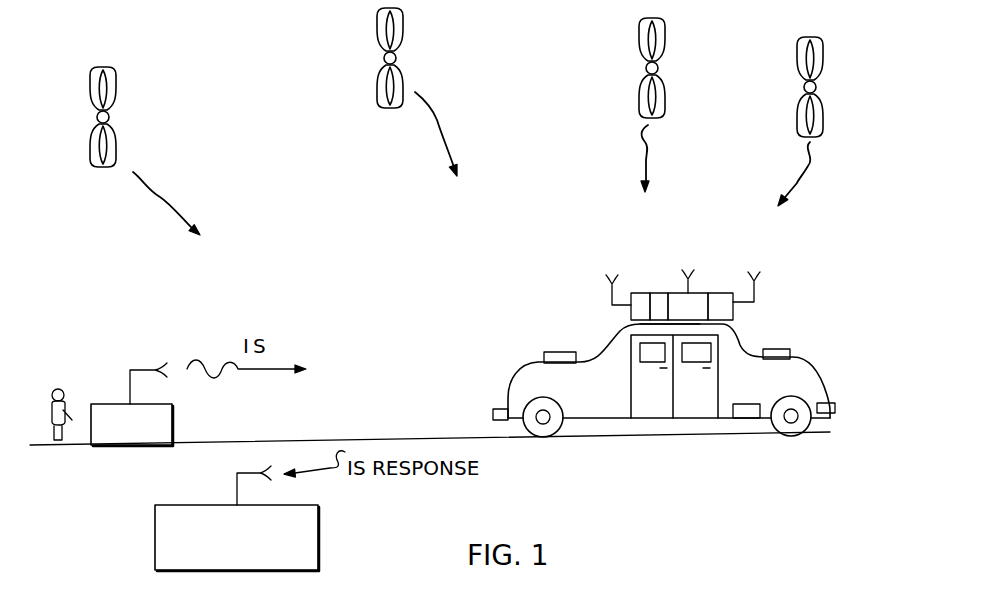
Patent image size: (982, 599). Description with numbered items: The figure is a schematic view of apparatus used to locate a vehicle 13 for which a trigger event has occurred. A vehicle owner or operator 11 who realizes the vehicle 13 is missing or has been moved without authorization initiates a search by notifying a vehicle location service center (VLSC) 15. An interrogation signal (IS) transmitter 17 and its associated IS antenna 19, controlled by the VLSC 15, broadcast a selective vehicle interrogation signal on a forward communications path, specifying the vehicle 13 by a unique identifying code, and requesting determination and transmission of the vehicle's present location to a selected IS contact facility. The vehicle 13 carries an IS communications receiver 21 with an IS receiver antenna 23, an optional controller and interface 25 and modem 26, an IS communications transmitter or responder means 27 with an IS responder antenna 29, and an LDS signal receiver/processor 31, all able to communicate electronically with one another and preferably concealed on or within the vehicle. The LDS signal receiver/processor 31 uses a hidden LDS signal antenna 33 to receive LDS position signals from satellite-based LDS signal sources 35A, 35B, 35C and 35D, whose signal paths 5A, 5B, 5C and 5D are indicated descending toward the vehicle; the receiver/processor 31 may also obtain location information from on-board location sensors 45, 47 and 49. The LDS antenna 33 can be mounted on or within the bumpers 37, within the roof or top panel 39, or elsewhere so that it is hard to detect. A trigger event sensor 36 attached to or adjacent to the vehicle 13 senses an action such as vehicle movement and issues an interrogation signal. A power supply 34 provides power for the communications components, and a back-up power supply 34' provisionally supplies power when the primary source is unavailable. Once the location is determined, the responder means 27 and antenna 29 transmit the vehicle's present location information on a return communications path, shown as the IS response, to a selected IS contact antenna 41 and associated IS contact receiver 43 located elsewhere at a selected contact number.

The wind direction arrow 5A is at (162, 198).
The wind direction arrow 5B is at (438, 137).
The wind direction arrow 5C is at (648, 164).
The wind direction arrow 5D is at (798, 182).
The LDS signal source 35A is at (110, 114).
The LDS signal source 35B is at (397, 55).
The LDS signal source 35C is at (659, 66).
The LDS signal source 35D is at (804, 89).
The vehicle owner or operator 11 is at (62, 392).
The vehicle 13 is at (706, 426).
The vehicle location service center (VLSC) 15 is at (135, 442).
The interrogation signal (IS) transmitter 17 is at (118, 445).
The IS antenna 19 is at (140, 365).
The IS communications receiver 21 is at (631, 295).
The IS receiver antenna 23 is at (611, 305).
The controller and interface 25 is at (664, 273).
The modem 26 is at (659, 300).
The IS communications transmitter or responder means 27 is at (726, 292).
The IS responder antenna 29 is at (760, 301).
The LDS signal receiver/processor 31 is at (708, 293).
The LDS signal antenna 33 is at (696, 293).
The power supply 34 is at (732, 446).
The back-up power supply 34' is at (732, 446).
The trigger event sensor 36 is at (773, 349).
The bumper 37 is at (823, 416).
The roof or top panel 39 is at (630, 325).
The IS contact antenna 41 is at (248, 472).
The IS contact receiver 43 is at (318, 540).
The on-board location sensor 45 is at (489, 372).
The on-board location sensor 47 is at (489, 372).
The on-board location sensor 49 is at (552, 360).